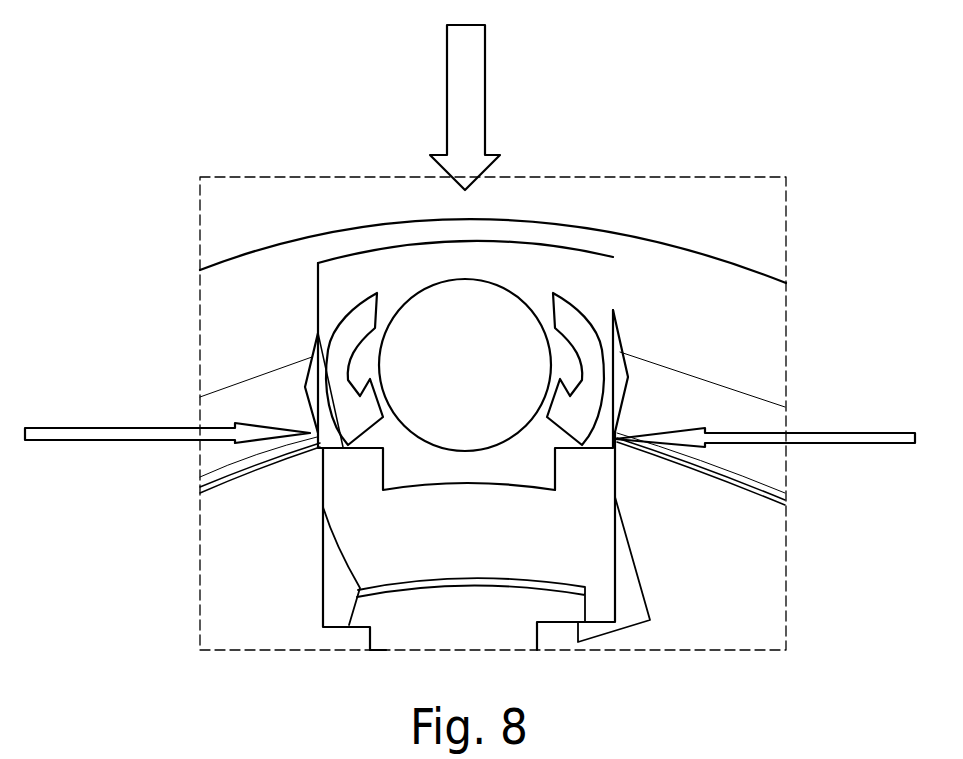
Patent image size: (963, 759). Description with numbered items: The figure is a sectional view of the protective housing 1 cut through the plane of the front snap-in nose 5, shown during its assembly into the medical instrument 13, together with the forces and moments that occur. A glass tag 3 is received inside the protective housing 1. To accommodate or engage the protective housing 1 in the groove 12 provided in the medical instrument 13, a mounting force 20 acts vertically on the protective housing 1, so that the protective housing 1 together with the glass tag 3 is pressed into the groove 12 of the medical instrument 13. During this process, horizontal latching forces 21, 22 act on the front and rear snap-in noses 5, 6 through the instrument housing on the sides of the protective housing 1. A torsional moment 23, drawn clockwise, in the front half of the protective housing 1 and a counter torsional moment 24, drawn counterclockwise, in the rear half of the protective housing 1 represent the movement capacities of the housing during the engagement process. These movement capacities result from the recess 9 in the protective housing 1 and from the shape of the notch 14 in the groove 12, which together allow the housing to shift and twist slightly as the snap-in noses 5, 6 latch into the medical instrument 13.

The protective housing 1 is at (478, 268).
The glass tag 3 is at (493, 312).
The front snap-in nose 5 is at (618, 388).
The rear snap-in nose 6 is at (315, 390).
The recess 9 is at (330, 438).
The groove 12 is at (323, 578).
The medical instrument 13 is at (710, 278).
The notch 14 is at (632, 615).
The mounting force 20 is at (460, 73).
The horizontal latching force 21 is at (835, 443).
The horizontal latching force 22 is at (78, 440).
The torsional moment 23 is at (583, 325).
The counter torsional moment 24 is at (347, 342).